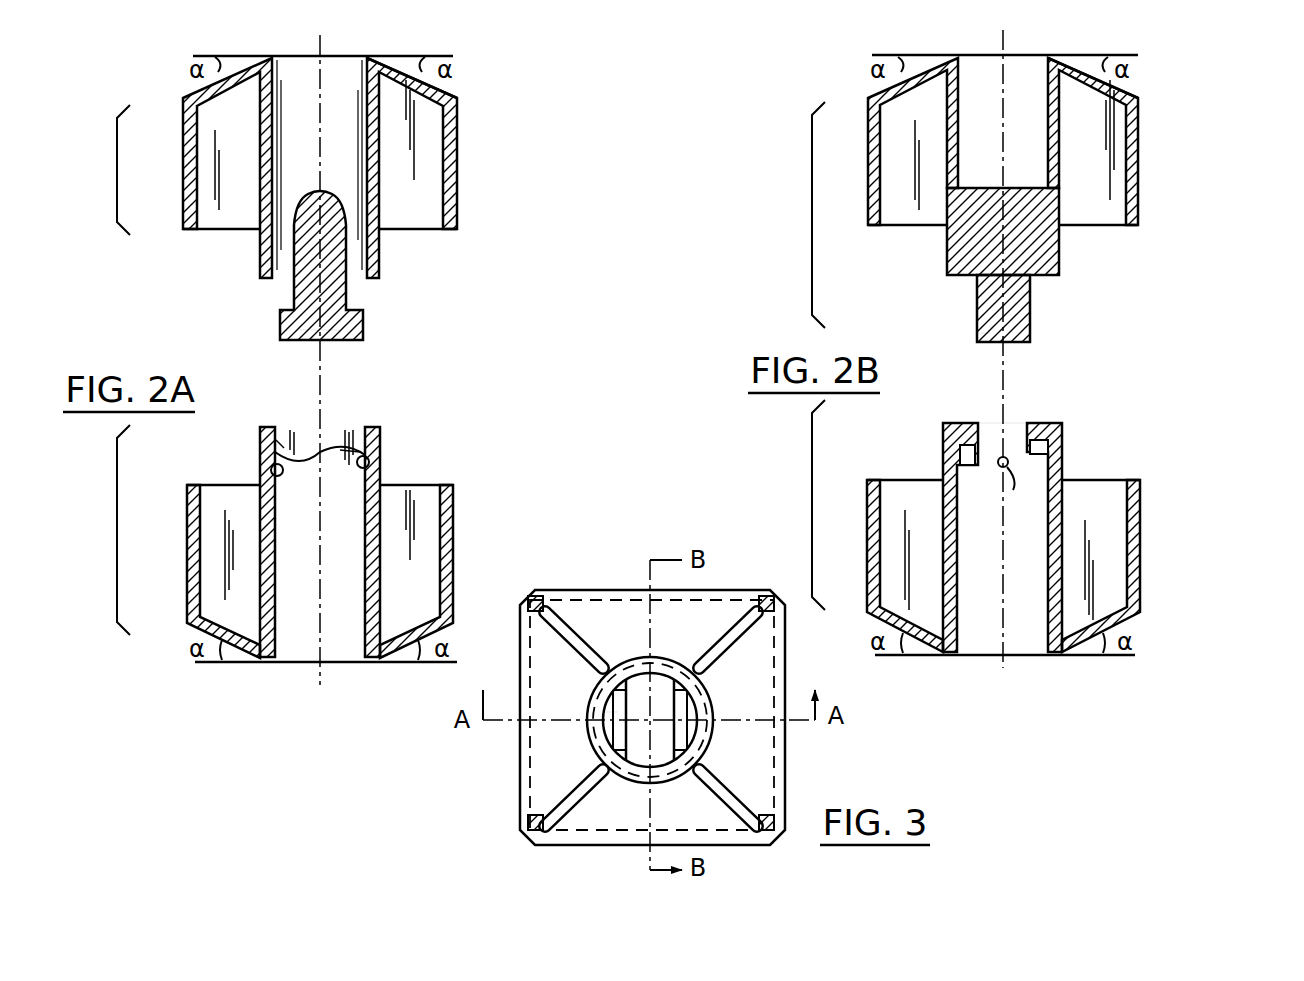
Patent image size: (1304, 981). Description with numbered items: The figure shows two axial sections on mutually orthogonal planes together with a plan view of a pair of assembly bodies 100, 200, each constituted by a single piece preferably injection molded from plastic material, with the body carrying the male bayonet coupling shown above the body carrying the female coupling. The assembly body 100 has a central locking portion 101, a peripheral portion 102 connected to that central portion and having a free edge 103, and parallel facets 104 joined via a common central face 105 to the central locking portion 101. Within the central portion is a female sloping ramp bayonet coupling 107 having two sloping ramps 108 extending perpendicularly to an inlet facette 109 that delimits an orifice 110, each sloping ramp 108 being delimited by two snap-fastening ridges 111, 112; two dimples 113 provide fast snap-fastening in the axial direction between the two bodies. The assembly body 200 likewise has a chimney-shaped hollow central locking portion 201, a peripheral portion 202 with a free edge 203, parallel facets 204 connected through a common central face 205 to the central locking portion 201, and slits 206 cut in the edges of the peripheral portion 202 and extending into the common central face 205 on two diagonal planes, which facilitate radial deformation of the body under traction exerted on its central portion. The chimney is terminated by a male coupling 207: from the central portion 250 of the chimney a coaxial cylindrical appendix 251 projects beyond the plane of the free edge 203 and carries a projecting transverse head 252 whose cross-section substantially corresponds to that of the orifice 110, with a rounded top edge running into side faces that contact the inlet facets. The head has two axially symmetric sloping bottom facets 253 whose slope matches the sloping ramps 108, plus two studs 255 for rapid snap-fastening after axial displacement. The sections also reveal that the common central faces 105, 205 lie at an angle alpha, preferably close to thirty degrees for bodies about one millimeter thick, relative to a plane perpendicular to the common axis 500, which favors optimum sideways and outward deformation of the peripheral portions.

In FIG. 2A, the assembly body 100 is at (470, 545).
In FIG. 2B, the assembly body 100 is at (1160, 580).
In FIG. 2A, the central locking portion 101 is at (392, 462).
In FIG. 2B, the central locking portion 101 is at (1065, 462).
In FIG. 2A, the peripheral portion 102 is at (468, 505).
In FIG. 2B, the peripheral portion 102 is at (1145, 495).
In FIG. 2A, the free edge 103 is at (195, 485).
In FIG. 2B, the free edge 103 is at (870, 480).
In FIG. 2A, the parallel facets 104 is at (187, 535).
In FIG. 2B, the parallel facets 104 is at (1140, 525).
In FIG. 2A, the common central face 105 is at (445, 620).
In FIG. 2B, the common central face 105 is at (1125, 612).
In FIG. 2A, the female sloping ramp bayonet coupling 107 is at (352, 425).
In FIG. 2B, the female sloping ramp bayonet coupling 107 is at (1010, 420).
In FIG. 2A, the sloping ramp 108 is at (300, 440).
In FIG. 2B, the sloping ramp 108 is at (1050, 445).
In FIG. 2A, the inlet facette 109 is at (330, 425).
In FIG. 2B, the inlet facette 109 is at (975, 422).
In FIG. 2B, the orifice 110 is at (988, 420).
In FIG. 2A, the snap-fastening ridge 111 is at (278, 440).
In FIG. 2A, the snap-fastening ridge 112 is at (355, 430).
In FIG. 2A, the dimple 113 is at (378, 445).
In FIG. 2B, the dimple 113 is at (1022, 491).
In FIG. 2A, the assembly body 200 is at (480, 200).
In FIG. 2B, the assembly body 200 is at (1165, 218).
In FIG. 3, the assembly body 200 is at (724, 570).
In FIG. 2A, the central locking portion 201 is at (380, 252).
In FIG. 2B, the central locking portion 201 is at (1062, 245).
In FIG. 2A, the peripheral portion 202 is at (462, 162).
In FIG. 2B, the peripheral portion 202 is at (1140, 165).
In FIG. 2A, the free edge 203 is at (190, 232).
In FIG. 2B, the free edge 203 is at (870, 230).
In FIG. 2A, the parallel facets 204 is at (460, 130).
In FIG. 2B, the parallel facets 204 is at (1140, 120).
In FIG. 3, the parallel facets 204 is at (600, 588).
In FIG. 2A, the common central face 205 is at (430, 85).
In FIG. 2B, the common central face 205 is at (1115, 85).
In FIG. 3, the slits 206 is at (552, 608).
In FIG. 2A, the male coupling 207 is at (278, 322).
In FIG. 2B, the male coupling 207 is at (975, 333).
In FIG. 2A, the central portion 250 is at (290, 240).
In FIG. 2B, the central portion 250 is at (963, 248).
In FIG. 3, the central portion 250 is at (642, 690).
In FIG. 2A, the coaxial cylindrical appendix 251 is at (295, 295).
In FIG. 2B, the coaxial cylindrical appendix 251 is at (985, 292).
In FIG. 2A, the projecting transverse head 252 is at (306, 423).
In FIG. 3, the projecting transverse head 252 is at (612, 712).
In FIG. 2A, the sloping bottom facette 253 is at (355, 318).
In FIG. 2B, the sloping bottom facette 253 is at (1030, 310).
In FIG. 2A, the stud 255 is at (285, 338).
In FIG. 2B, the stud 255 is at (1010, 348).
In FIG. 3, the stud 255 is at (605, 728).
In FIG. 2A, the common axis 500 is at (322, 50).
In FIG. 2B, the common axis 500 is at (1005, 42).